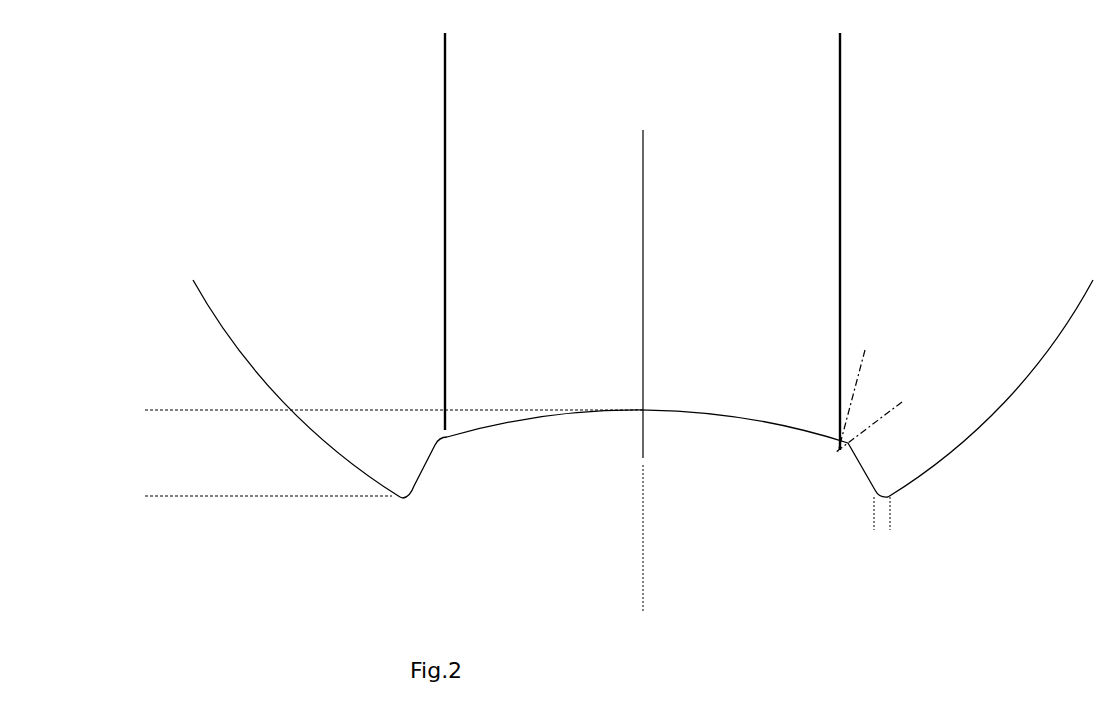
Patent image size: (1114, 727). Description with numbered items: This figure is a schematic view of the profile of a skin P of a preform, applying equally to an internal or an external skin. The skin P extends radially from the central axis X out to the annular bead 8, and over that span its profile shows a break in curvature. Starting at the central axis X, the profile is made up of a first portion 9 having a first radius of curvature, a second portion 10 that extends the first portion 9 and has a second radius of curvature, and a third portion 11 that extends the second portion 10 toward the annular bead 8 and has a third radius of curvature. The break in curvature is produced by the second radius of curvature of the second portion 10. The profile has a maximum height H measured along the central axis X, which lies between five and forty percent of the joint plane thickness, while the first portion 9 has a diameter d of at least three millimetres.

The annular bead 8 is at (881, 544).
The first portion 9 is at (724, 438).
The second portion 10 is at (867, 407).
The third portion 11 is at (852, 479).
The skin P is at (219, 299).
The central axis X is at (640, 505).
The diameter d is at (837, 75).
The maximum height H is at (166, 412).